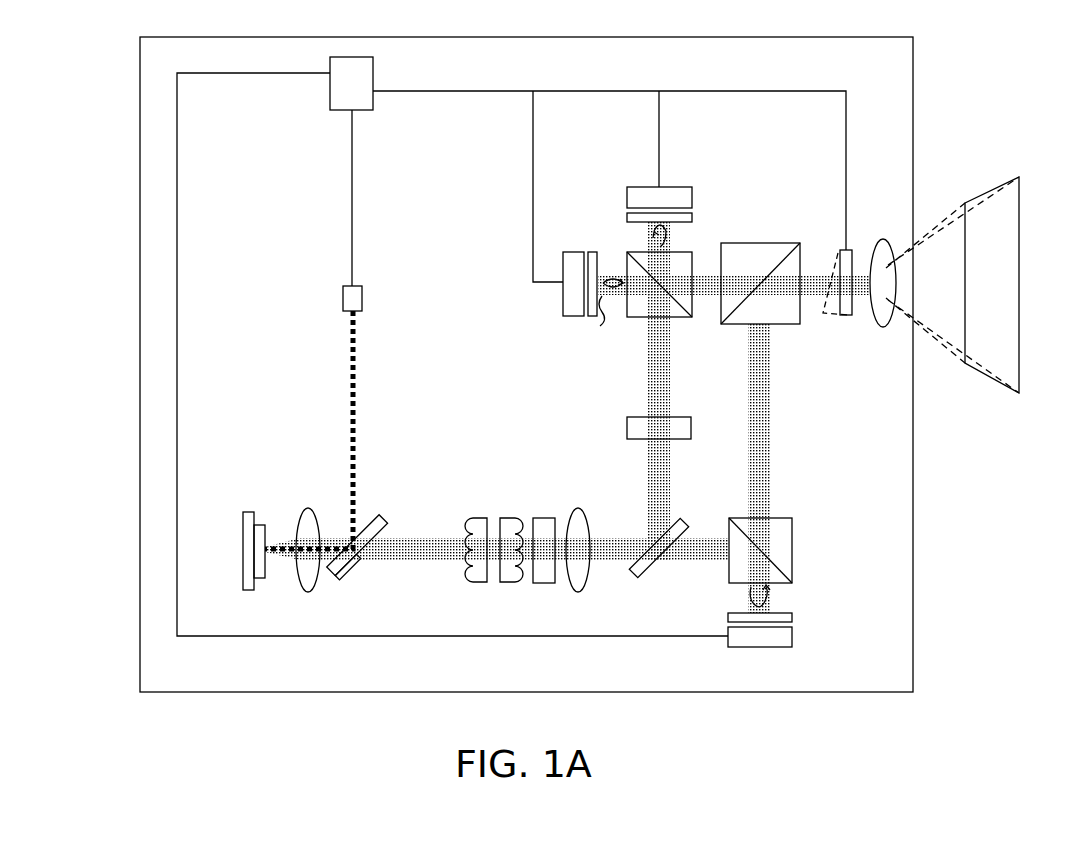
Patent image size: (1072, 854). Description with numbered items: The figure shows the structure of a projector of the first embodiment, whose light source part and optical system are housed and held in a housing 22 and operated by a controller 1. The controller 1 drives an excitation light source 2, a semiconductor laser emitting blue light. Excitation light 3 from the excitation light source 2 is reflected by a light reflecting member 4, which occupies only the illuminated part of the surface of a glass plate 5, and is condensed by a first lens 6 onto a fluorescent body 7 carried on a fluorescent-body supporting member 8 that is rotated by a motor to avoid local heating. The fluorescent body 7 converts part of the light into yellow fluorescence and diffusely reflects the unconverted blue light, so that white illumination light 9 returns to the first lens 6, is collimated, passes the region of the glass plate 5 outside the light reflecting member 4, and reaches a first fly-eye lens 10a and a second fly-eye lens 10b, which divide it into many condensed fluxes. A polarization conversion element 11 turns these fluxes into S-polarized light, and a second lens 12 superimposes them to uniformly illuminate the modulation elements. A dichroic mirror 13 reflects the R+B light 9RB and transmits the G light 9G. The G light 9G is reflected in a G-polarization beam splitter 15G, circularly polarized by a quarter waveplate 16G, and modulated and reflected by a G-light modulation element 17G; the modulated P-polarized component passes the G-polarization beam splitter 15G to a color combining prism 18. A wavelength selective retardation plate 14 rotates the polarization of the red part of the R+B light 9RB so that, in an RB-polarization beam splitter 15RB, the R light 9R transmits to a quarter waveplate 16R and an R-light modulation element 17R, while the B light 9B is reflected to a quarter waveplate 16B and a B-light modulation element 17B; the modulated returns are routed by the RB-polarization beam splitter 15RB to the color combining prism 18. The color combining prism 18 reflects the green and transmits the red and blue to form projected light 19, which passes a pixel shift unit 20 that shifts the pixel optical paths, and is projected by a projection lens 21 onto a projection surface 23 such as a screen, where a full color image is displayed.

The controller 1 is at (336, 100).
The excitation light source 2 is at (358, 298).
The excitation light 3 is at (354, 402).
The light reflecting member 4 is at (358, 575).
The glass plate 5 is at (343, 574).
The first lens 6 is at (304, 578).
The fluorescent body 7 is at (258, 576).
The fluorescent-body supporting member 8 is at (248, 556).
The illumination light 9 is at (424, 547).
The first fly-eye lens 10a is at (484, 584).
The second fly-eye lens 10b is at (507, 516).
The polarization conversion element 11 is at (545, 585).
The second lens 12 is at (577, 578).
The dichroic mirror 13 is at (646, 574).
The wavelength selective retardation plate 14 is at (636, 430).
The G-polarization beam splitter 15G is at (784, 548).
The RB-polarization beam splitter 15RB is at (650, 308).
The quarter waveplate 16B is at (593, 318).
The quarter waveplate 16G is at (780, 617).
The quarter waveplate 16R is at (626, 206).
The B-light modulation element 17B is at (566, 264).
The G-light modulation element 17G is at (755, 635).
The R-light modulation element 17R is at (682, 198).
The color combining prism 18 is at (760, 252).
The projected light 19 is at (818, 274).
The pixel shift unit 20 is at (846, 309).
The projection lens 21 is at (883, 314).
The housing 22 is at (895, 653).
The projection surface 23 is at (1002, 282).
The B light 9B is at (612, 310).
The G light 9G is at (760, 412).
The R light 9R is at (649, 238).
The R+B light 9RB is at (660, 492).